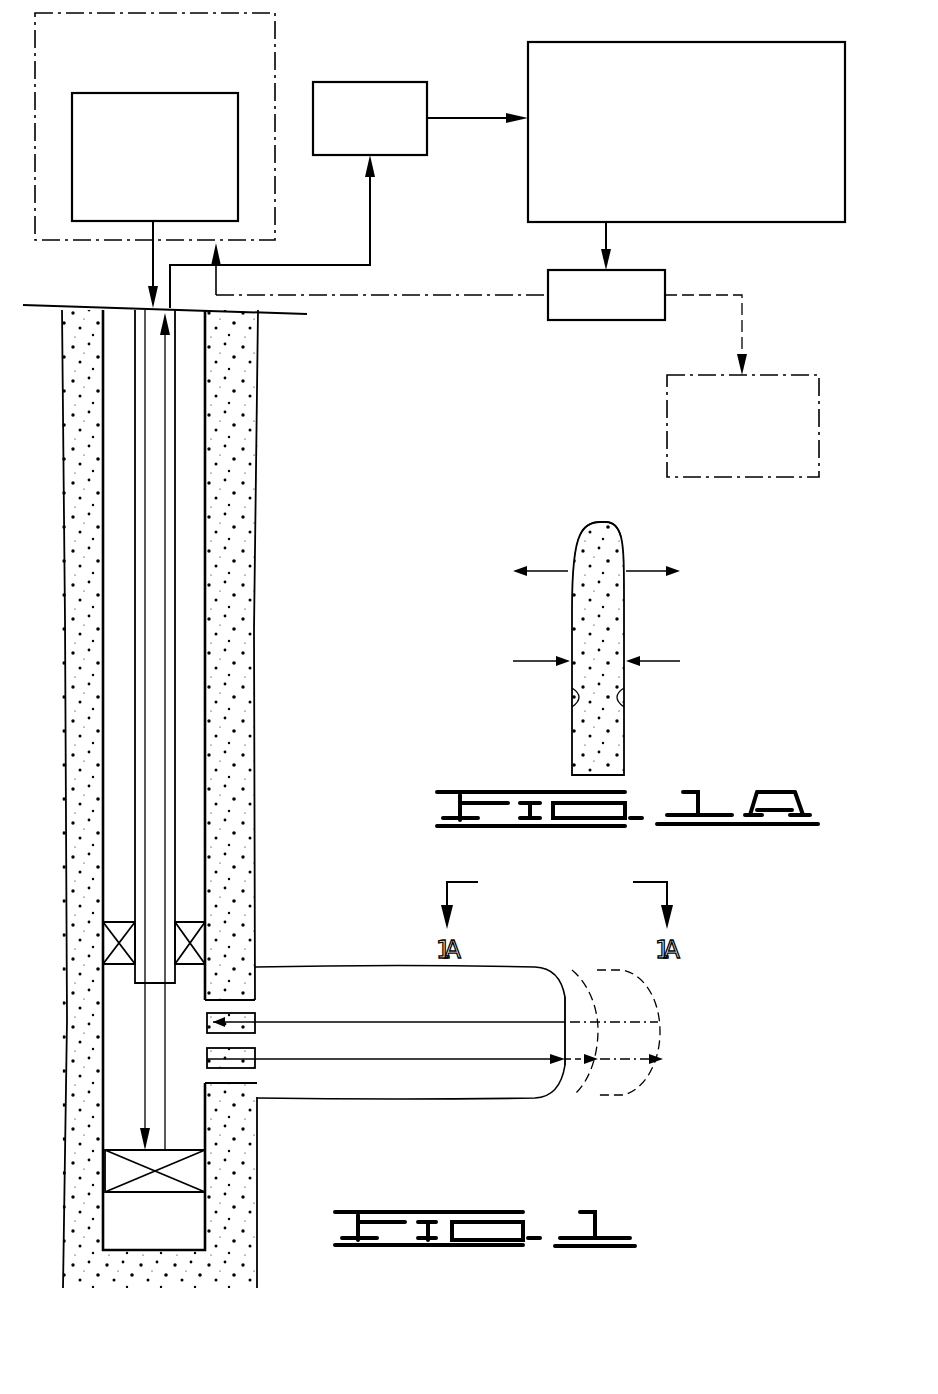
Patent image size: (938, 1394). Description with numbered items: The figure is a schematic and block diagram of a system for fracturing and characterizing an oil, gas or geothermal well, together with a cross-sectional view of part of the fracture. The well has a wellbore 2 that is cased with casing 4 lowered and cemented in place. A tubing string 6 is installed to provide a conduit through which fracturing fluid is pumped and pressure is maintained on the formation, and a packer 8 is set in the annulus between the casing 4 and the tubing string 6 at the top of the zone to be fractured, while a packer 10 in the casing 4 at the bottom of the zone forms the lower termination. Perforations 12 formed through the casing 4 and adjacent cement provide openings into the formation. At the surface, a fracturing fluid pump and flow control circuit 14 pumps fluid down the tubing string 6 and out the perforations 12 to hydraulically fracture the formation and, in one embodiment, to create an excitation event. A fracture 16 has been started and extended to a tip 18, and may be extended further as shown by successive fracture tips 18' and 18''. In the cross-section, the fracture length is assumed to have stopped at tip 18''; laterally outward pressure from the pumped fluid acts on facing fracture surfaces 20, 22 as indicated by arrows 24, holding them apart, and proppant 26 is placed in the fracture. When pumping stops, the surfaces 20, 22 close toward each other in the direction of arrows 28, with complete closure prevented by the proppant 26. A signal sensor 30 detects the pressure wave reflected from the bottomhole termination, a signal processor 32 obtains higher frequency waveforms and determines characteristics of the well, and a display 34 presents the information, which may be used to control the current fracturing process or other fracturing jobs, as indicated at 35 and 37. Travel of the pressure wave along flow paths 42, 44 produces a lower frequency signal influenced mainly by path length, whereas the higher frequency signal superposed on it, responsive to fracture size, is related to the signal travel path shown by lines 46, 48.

In FIG. 1, the wellbore 2 is at (232, 630).
In FIG. 1, the casing 4 is at (207, 505).
In FIG. 1, the tubing string 6 is at (175, 868).
In FIG. 1, the packer 8 is at (120, 922).
In FIG. 1, the packer 10 is at (157, 1193).
In FIG. 1, the perforations 12 is at (253, 1005).
In FIG. 1, the fracturing fluid pump and flow control circuit 14 is at (240, 107).
In FIG. 1, the fracture 16 is at (395, 1085).
In FIG. 1A, the fracture 16 is at (462, 645).
In FIG. 1, the tip 18 is at (520, 1031).
In FIG. 1, the successive fracture tip 18' is at (557, 1061).
In FIG. 1, the successive fracture tip 18'' is at (673, 1032).
In FIG. 1A, the successive fracture tip 18'' is at (570, 499).
In FIG. 1A, the fracture surface 20 is at (567, 703).
In FIG. 1A, the fracture surface 22 is at (627, 703).
In FIG. 1A, the arrows 24 is at (548, 573).
In FIG. 1A, the proppant 26 is at (583, 553).
In FIG. 1A, the arrows 28 is at (530, 663).
In FIG. 1, the signal sensor 30 is at (370, 82).
In FIG. 1, the signal processor 32 is at (655, 42).
In FIG. 1, the display 34 is at (636, 270).
In FIG. 1, the control of current fracturing process 35 is at (383, 297).
In FIG. 1, the control of other fracturing jobs 37 is at (728, 294).
In FIG. 1, the flow path line 42 is at (145, 773).
In FIG. 1, the flow path line 44 is at (165, 710).
In FIG. 1, the signal travel path line 46 is at (458, 1058).
In FIG. 1, the signal travel path line 48 is at (415, 1022).